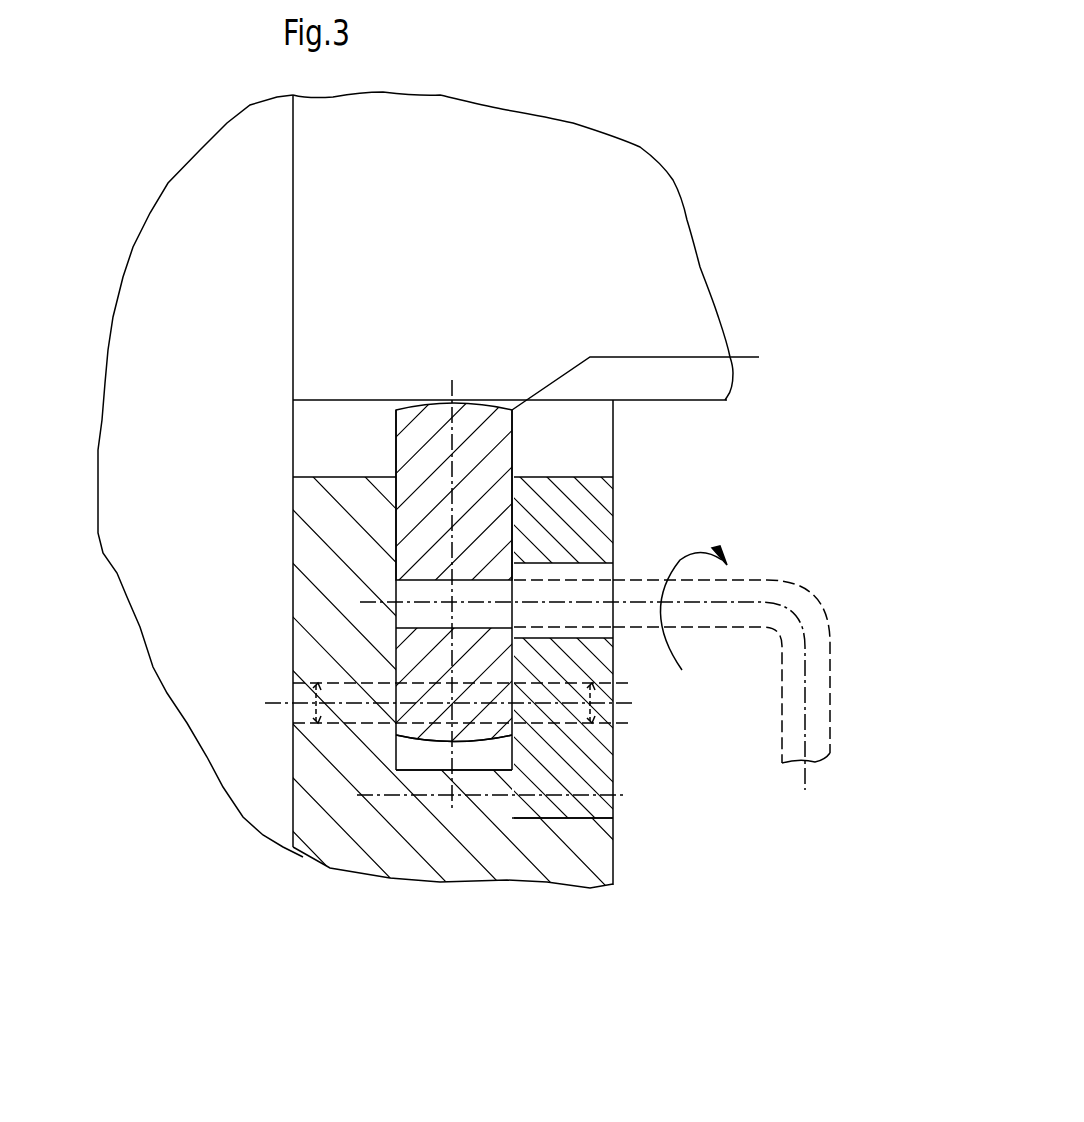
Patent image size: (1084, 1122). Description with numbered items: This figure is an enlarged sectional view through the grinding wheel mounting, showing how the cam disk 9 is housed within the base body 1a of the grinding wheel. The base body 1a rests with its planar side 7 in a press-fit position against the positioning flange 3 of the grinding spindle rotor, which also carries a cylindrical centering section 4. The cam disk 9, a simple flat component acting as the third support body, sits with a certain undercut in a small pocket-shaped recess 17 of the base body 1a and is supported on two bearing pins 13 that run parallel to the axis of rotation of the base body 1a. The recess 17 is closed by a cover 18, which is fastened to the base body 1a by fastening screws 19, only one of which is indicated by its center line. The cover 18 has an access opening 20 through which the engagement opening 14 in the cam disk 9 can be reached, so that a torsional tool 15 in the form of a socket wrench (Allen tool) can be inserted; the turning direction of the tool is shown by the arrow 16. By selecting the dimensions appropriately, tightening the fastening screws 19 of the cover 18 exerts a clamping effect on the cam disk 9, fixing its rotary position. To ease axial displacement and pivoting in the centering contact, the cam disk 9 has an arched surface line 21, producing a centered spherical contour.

The base body 1a is at (365, 825).
The positioning flange 3 is at (207, 632).
The cylindrical centering section 4 is at (667, 267).
The planar side 7 is at (293, 789).
The cam disk 9 is at (425, 465).
The bearing pins 13 is at (585, 702).
The engagement opening 14 is at (410, 590).
The torsional tool 15 is at (795, 612).
The arrow 16 is at (730, 563).
The pocket-shaped recess 17 is at (470, 753).
The cover 18 is at (565, 506).
The fastening screws 19 is at (623, 795).
The access opening 20 is at (580, 573).
The arched surface line 21 is at (649, 371).